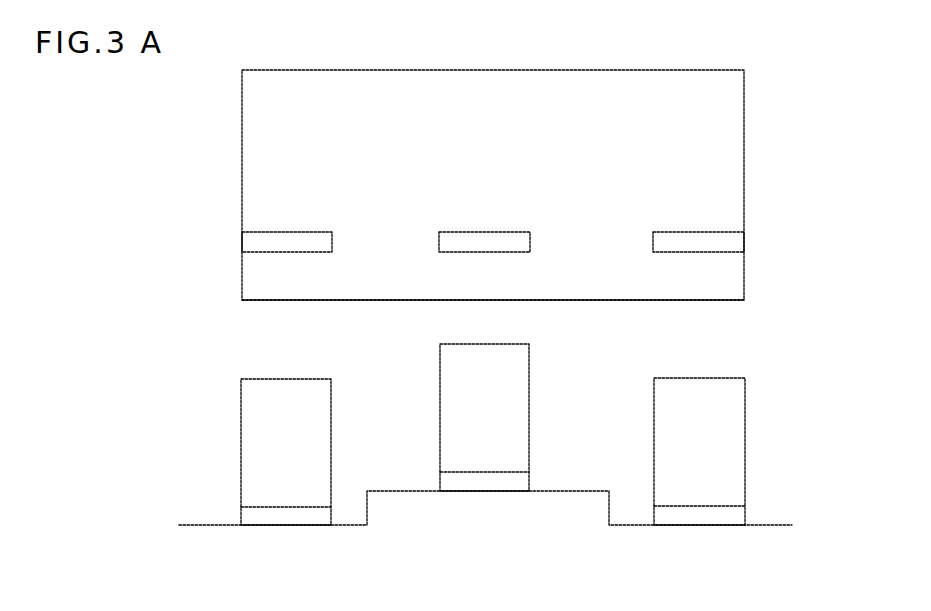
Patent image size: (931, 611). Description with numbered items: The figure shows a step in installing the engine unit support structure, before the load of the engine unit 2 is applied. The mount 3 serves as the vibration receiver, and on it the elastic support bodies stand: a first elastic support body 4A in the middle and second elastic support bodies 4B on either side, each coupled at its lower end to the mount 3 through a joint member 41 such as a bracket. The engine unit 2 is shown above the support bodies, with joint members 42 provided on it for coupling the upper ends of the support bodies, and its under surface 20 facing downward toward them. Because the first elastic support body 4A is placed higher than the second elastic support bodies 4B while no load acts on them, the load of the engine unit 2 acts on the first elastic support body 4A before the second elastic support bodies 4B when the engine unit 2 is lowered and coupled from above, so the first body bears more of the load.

The engine unit 2 is at (657, 69).
The under surface 20 is at (614, 300).
The joint member 42 is at (271, 240).
The mount 3 is at (776, 523).
The first elastic support body 4A is at (507, 427).
The second elastic support body 4B is at (241, 468).
The joint member 41 is at (264, 520).